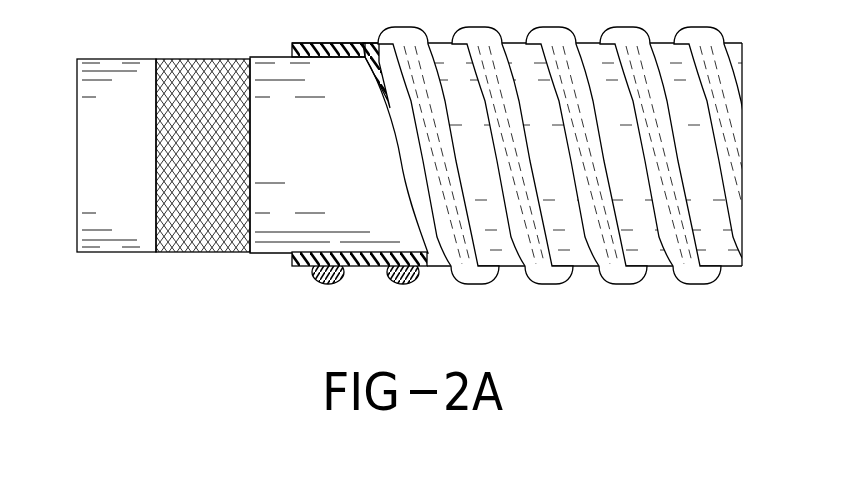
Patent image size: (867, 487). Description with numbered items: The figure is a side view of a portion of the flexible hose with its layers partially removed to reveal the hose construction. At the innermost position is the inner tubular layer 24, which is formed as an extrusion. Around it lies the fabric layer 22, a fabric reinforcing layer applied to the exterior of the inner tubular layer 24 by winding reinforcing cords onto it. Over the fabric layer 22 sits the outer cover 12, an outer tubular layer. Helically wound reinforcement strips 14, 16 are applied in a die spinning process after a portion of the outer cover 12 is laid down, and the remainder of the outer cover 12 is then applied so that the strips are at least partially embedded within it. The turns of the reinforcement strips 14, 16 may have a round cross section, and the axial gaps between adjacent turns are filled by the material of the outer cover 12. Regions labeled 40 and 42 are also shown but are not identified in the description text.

The outer cover 12 is at (590, 268).
The reinforcement strip 14 is at (461, 284).
The reinforcement strip 16 is at (534, 284).
The fabric layer 22 is at (172, 59).
The inner tubular layer 24 is at (105, 59).
The hose liner with embedded wires 40 is at (302, 267).
The inner core layer 42 is at (127, 167).